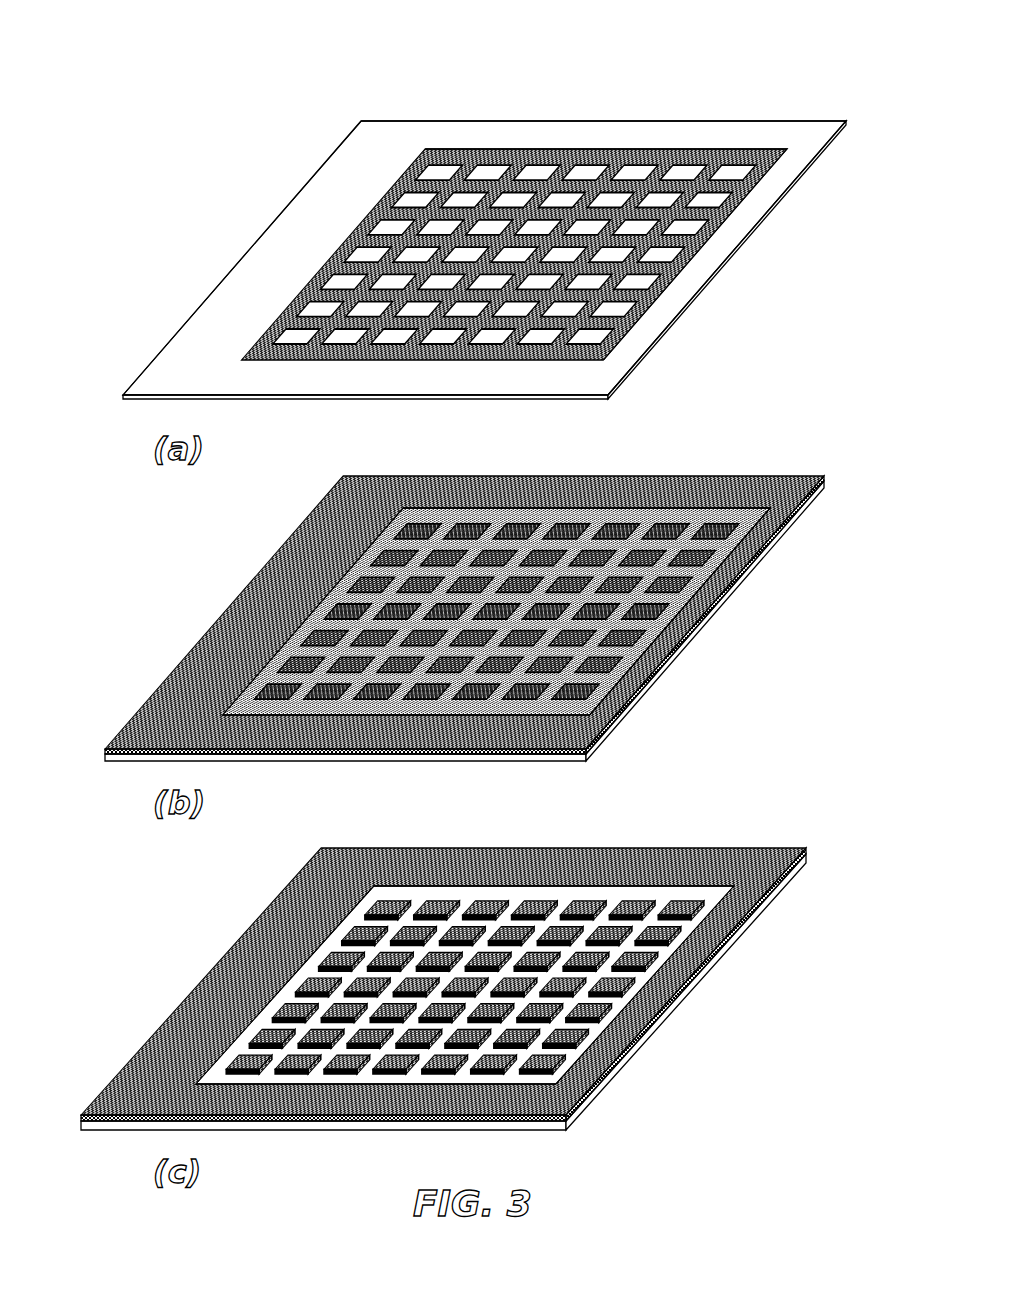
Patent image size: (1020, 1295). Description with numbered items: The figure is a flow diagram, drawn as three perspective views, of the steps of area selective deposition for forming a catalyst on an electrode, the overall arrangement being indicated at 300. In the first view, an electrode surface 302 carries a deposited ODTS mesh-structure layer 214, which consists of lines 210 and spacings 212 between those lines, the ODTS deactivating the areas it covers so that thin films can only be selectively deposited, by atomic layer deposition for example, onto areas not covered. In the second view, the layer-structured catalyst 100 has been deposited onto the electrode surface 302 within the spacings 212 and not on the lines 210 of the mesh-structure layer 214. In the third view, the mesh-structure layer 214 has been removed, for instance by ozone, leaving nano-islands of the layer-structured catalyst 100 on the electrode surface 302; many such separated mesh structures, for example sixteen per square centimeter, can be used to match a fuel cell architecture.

The transmission electrode structure assembly 300 is at (123, 100).
The electrode surface 302 is at (705, 262).
The layer-structured catalyst 100 is at (718, 466).
The lines 210 is at (395, 190).
The spacings 212 is at (410, 146).
The mesh-structure layer 214 is at (745, 143).